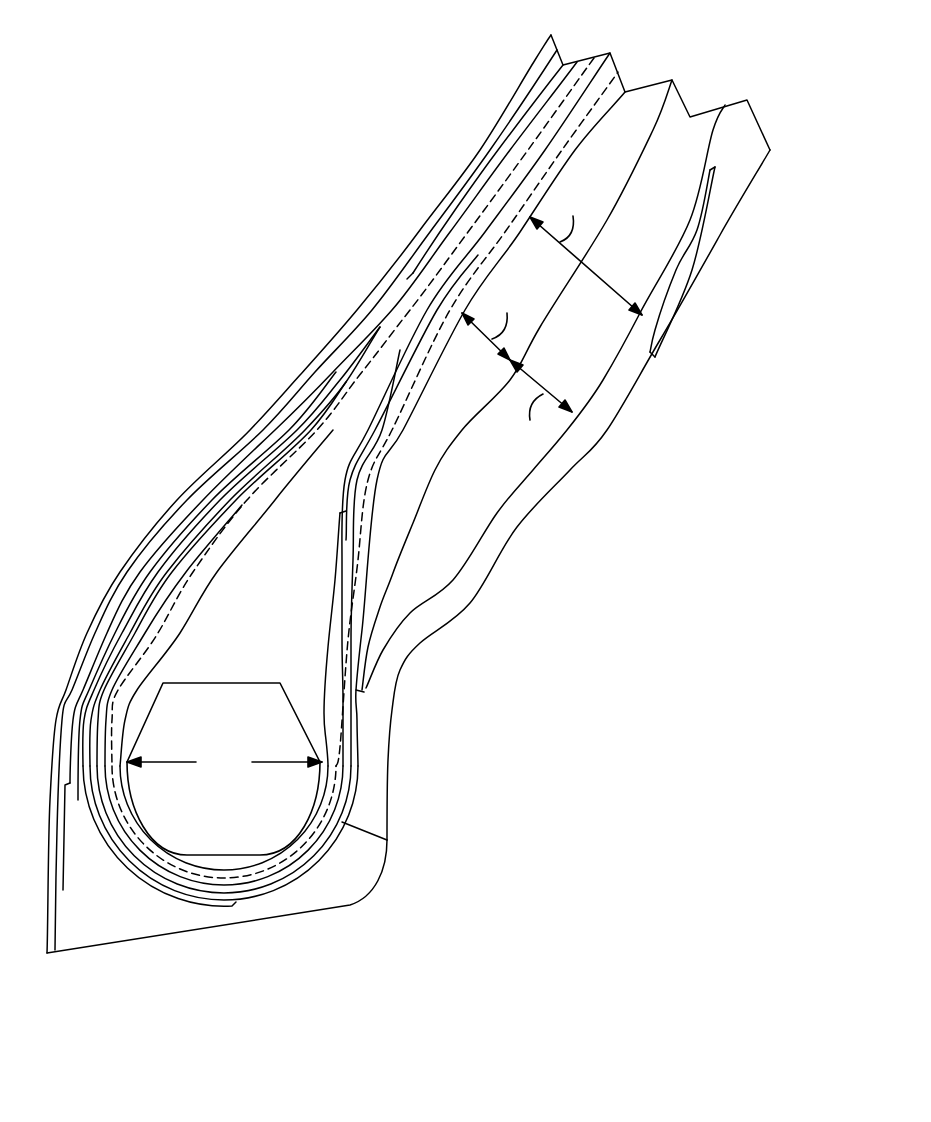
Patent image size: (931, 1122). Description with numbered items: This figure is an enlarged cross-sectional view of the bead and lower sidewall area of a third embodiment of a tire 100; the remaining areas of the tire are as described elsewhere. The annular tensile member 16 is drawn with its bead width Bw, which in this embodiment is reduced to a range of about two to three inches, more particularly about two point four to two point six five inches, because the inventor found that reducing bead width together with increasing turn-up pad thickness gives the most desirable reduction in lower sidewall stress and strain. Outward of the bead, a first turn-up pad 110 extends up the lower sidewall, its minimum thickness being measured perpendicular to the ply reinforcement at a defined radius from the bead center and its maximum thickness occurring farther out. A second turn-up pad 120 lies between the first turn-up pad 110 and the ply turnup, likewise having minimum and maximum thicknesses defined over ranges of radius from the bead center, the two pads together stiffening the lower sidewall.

The tire 100 is at (187, 434).
The first turn-up pad 110 is at (505, 483).
The second turn-up pad 120 is at (637, 107).
The annular tensile member 16 is at (283, 823).